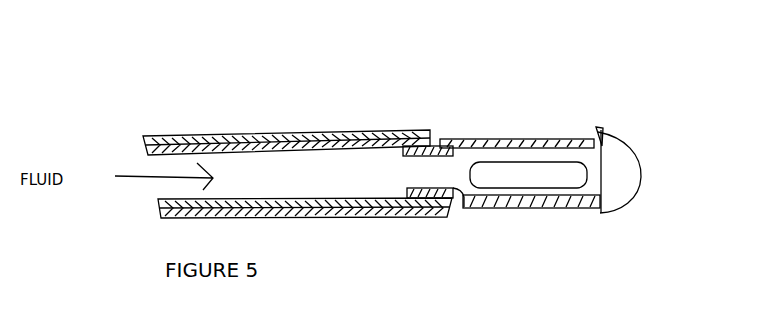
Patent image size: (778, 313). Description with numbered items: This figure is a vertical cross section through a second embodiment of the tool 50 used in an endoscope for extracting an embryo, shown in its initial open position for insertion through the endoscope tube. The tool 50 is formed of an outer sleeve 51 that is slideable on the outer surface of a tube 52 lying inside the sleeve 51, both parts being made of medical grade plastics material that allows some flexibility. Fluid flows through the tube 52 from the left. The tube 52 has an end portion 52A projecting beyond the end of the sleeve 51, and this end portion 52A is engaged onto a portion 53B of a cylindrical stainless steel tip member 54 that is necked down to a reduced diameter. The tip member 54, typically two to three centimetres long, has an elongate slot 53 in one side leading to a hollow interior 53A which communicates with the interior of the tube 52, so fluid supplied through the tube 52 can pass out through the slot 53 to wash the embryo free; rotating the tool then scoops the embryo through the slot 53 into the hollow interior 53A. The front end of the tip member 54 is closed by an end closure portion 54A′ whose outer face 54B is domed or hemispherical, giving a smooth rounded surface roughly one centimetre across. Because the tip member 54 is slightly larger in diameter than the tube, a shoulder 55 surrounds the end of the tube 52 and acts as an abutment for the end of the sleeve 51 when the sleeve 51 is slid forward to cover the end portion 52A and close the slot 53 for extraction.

The tool 50 is at (438, 79).
The outer sleeve 51 is at (356, 131).
The tube 52 is at (507, 209).
The end portion 52A is at (490, 138).
The elongate slot 53 is at (517, 178).
The hollow interior 53A is at (453, 177).
The necked-down portion 53B is at (421, 192).
The tip member 54 is at (617, 160).
The end closure portion 54A′ is at (603, 147).
The outer face 54B is at (641, 176).
The shoulder 55 is at (601, 213).